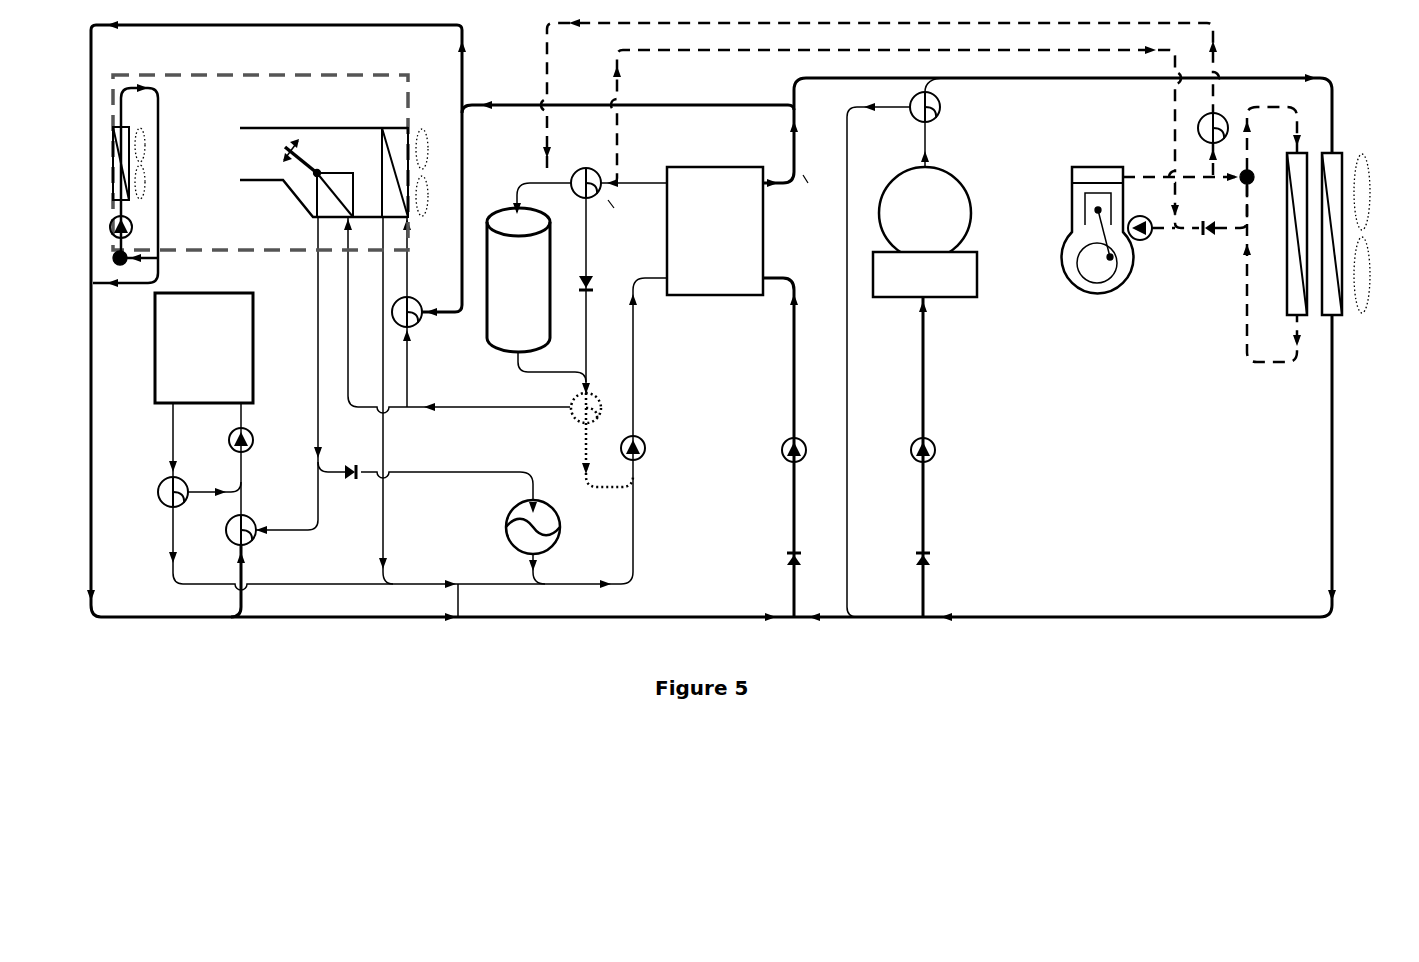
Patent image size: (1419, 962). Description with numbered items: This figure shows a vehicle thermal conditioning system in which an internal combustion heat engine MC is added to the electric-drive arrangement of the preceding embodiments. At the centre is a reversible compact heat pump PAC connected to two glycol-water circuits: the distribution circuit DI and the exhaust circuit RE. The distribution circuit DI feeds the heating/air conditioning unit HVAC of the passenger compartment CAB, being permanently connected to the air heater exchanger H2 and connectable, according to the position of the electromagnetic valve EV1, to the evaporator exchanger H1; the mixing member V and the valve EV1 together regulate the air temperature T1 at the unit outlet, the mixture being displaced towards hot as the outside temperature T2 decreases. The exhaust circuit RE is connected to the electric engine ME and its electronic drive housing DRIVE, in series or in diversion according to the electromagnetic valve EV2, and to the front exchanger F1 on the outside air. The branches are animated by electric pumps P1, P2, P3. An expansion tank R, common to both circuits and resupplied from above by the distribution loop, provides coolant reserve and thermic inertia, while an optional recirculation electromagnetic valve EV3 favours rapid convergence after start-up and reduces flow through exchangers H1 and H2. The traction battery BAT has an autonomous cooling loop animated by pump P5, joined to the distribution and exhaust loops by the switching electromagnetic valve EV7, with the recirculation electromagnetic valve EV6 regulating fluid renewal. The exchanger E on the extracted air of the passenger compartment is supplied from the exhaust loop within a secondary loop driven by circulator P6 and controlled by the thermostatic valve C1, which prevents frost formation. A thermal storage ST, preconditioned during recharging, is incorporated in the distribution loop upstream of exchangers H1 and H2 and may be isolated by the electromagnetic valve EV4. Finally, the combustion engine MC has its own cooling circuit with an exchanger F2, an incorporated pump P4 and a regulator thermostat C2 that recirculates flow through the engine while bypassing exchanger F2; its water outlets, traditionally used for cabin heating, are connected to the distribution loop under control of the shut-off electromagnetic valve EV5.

The passenger compartment CAB is at (260, 162).
The exchanger on the extracted air of the passenger compartment E is at (125, 185).
The circulator P6 is at (131, 224).
The thermostatic valve C1 is at (128, 267).
The heating/air conditioning unit HVAC is at (320, 172).
The exchanger (air heater) H2 is at (335, 178).
The exchanger (evaporator) H1 is at (403, 160).
The mixing member V is at (292, 158).
The air temperature at the outlet of the HVAC unit T1 is at (245, 149).
The electromagnetic valve EV1 is at (420, 311).
The traction battery BAT is at (204, 348).
The pump P5 is at (229, 440).
The recirculation electromagnetic valve EV6 is at (162, 502).
The switching electromagnetic valve EV7 is at (250, 530).
The thermal storage ST is at (518, 280).
The electromagnetic valve EV4 is at (570, 185).
The distribution circuit DI is at (624, 213).
The reversible compact heat pump PAC is at (715, 231).
The exhaust circuit RE is at (790, 193).
The recirculation electromagnetic valve EV3 is at (602, 438).
The electric pump P1 is at (622, 448).
The expansion tank R is at (524, 527).
The electric pump P2 is at (778, 450).
The electric pump P3 is at (912, 450).
The electromagnetic valve EV2 is at (943, 111).
The electric engine ME is at (925, 213).
The electronic drive housing DRIVE is at (925, 274).
The shut-off electromagnetic valve EV5 is at (1213, 126).
The internal combustion heat engine MC is at (1098, 230).
The incorporated pump P4 is at (1143, 239).
The regulator thermostat C2 is at (1238, 185).
The exchanger F2 is at (1285, 249).
The exchanger F1 is at (1346, 249).
The outside temperature T2 is at (1387, 234).